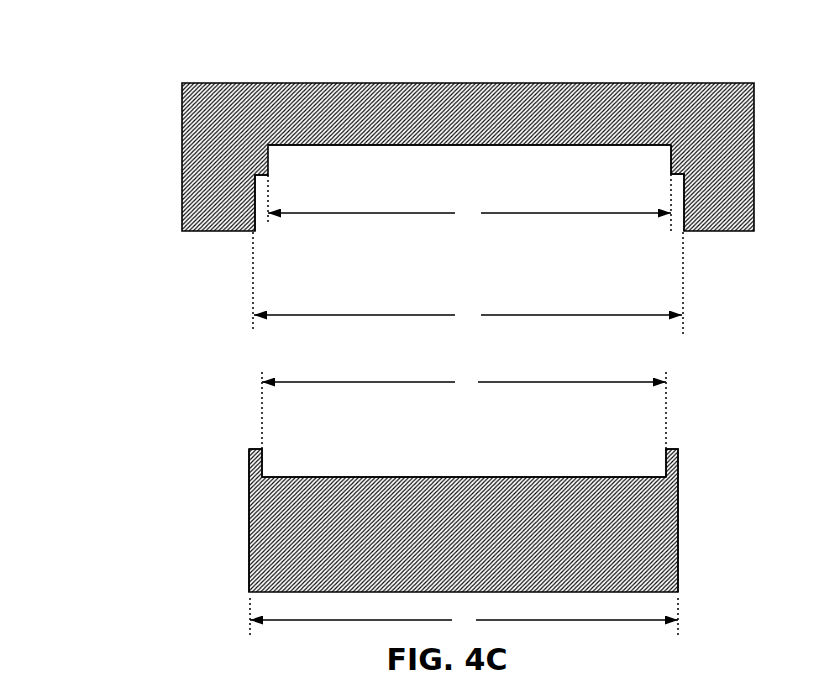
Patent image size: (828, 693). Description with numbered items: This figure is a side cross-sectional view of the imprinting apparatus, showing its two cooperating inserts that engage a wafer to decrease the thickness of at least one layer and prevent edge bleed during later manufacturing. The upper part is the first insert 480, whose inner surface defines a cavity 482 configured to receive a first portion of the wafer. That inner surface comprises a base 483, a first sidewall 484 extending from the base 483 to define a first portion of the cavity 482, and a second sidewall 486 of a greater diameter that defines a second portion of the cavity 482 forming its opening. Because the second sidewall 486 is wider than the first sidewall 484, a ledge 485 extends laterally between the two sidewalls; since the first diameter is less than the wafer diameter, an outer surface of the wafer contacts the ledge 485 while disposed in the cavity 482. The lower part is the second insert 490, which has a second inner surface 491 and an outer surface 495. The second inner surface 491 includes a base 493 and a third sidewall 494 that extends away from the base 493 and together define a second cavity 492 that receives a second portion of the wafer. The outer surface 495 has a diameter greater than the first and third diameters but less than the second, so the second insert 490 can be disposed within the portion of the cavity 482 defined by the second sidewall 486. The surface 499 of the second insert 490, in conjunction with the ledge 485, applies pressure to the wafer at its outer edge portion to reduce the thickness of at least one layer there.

The first insert 480 is at (168, 62).
The cavity 482 is at (483, 253).
The base 483 is at (573, 148).
The first sidewall 484 is at (268, 151).
The ledge 485 is at (677, 175).
The second sidewall 486 is at (255, 222).
The second insert 490 is at (199, 437).
The second inner surface 491 is at (663, 458).
The second cavity 492 is at (473, 443).
The base 493 is at (386, 477).
The third sidewall 494 is at (263, 460).
The outer surface 495 is at (249, 504).
The surface 499 is at (672, 449).